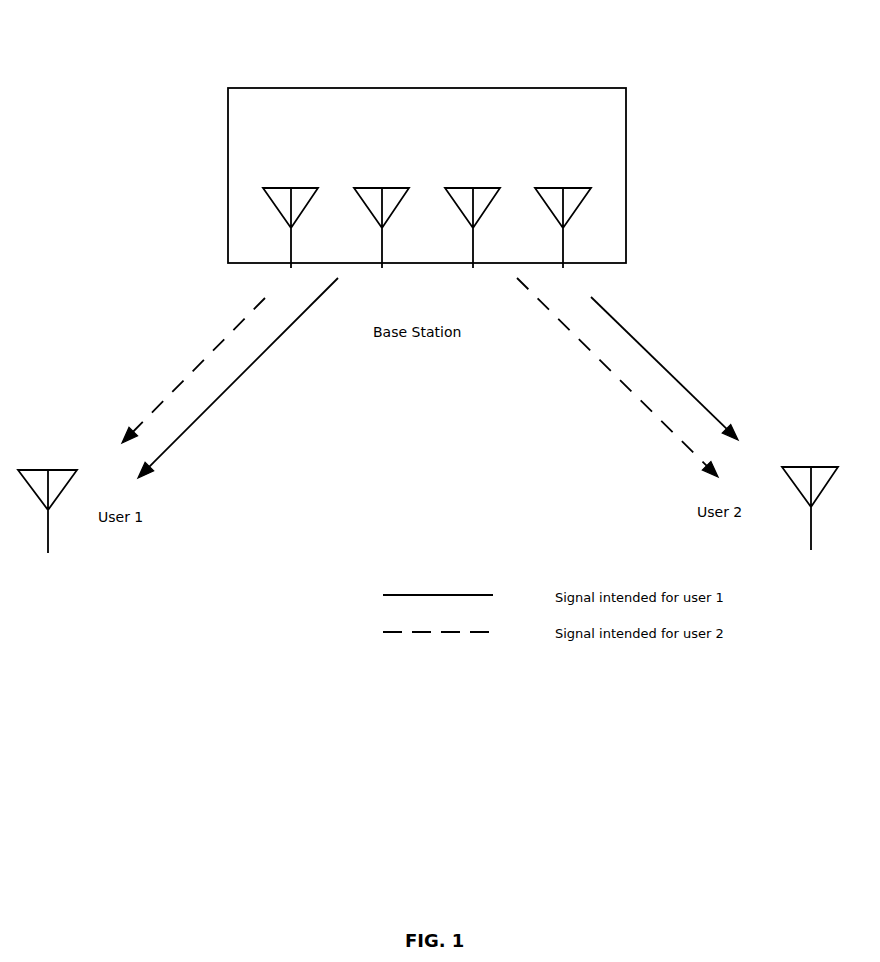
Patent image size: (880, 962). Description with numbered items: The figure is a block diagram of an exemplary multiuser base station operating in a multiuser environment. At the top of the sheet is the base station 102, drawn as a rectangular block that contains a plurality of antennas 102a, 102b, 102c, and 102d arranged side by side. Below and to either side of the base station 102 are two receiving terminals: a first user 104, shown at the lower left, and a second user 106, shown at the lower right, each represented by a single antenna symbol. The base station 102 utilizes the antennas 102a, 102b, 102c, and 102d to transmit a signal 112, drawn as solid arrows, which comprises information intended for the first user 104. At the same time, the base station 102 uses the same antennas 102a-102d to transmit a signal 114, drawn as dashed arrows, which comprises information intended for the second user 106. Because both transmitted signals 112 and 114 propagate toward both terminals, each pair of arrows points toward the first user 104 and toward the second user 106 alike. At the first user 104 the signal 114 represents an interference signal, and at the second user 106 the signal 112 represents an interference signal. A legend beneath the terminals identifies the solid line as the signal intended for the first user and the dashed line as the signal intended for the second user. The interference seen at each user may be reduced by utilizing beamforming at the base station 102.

The base station 102 is at (393, 88).
The antenna 102a is at (292, 188).
The antenna 102b is at (382, 188).
The antenna 102c is at (473, 188).
The antenna 102d is at (563, 188).
The first user 104 is at (48, 470).
The second user 106 is at (812, 467).
The signal 112 is at (255, 363).
The signal 114 is at (195, 370).